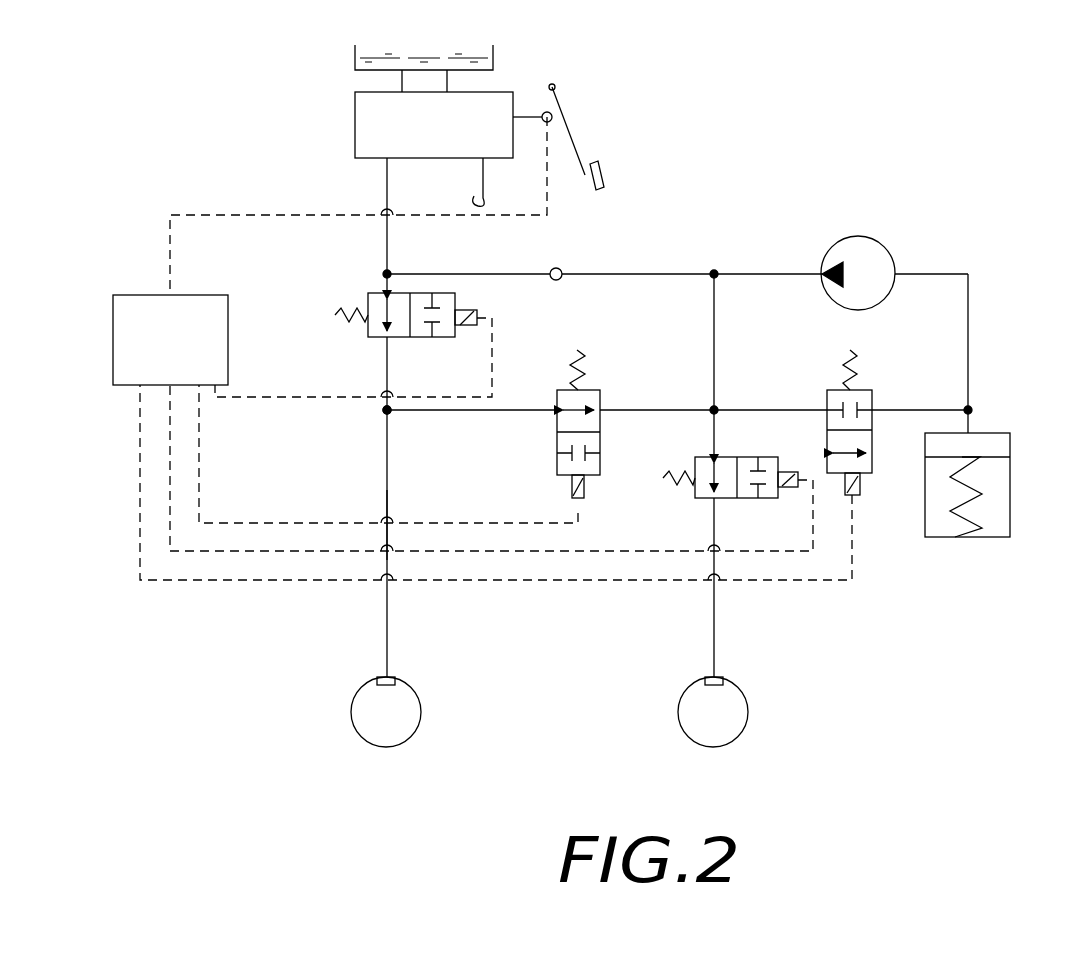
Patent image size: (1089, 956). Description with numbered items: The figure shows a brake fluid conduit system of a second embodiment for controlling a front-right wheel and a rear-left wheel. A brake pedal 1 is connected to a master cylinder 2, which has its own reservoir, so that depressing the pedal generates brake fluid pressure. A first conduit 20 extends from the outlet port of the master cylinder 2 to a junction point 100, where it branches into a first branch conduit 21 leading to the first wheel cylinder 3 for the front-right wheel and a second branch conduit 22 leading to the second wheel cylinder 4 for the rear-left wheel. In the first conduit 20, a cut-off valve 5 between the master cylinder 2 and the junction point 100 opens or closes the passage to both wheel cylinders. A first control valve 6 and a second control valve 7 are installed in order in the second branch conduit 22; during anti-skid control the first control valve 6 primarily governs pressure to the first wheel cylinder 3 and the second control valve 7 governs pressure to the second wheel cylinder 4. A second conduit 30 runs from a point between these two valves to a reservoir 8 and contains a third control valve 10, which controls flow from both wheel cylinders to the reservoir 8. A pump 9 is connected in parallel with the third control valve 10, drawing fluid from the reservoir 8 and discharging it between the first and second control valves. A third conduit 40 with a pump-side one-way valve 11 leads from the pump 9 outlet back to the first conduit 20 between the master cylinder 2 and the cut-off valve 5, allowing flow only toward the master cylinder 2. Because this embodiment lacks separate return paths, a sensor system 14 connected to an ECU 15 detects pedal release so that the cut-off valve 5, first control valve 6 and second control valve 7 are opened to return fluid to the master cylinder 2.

The brake pedal 1 is at (568, 127).
The master cylinder 2 is at (358, 138).
The first wheel cylinder 3 is at (393, 678).
The second wheel cylinder 4 is at (720, 678).
The cut-off valve 5 is at (365, 332).
The first control valve 6 is at (601, 390).
The second control valve 7 is at (770, 500).
The reservoir 8 is at (1003, 495).
The pump 9 is at (880, 240).
The third control valve 10 is at (873, 388).
The pump-side one-way valve 11 is at (559, 267).
The sensor system 14 is at (549, 93).
The ECU 15 is at (228, 338).
The first conduit 20 is at (383, 230).
The first branch conduit 21 is at (380, 513).
The second branch conduit 22 is at (497, 412).
The second conduit 30 is at (773, 409).
The third conduit 40 is at (649, 273).
The junction point 100 is at (389, 414).